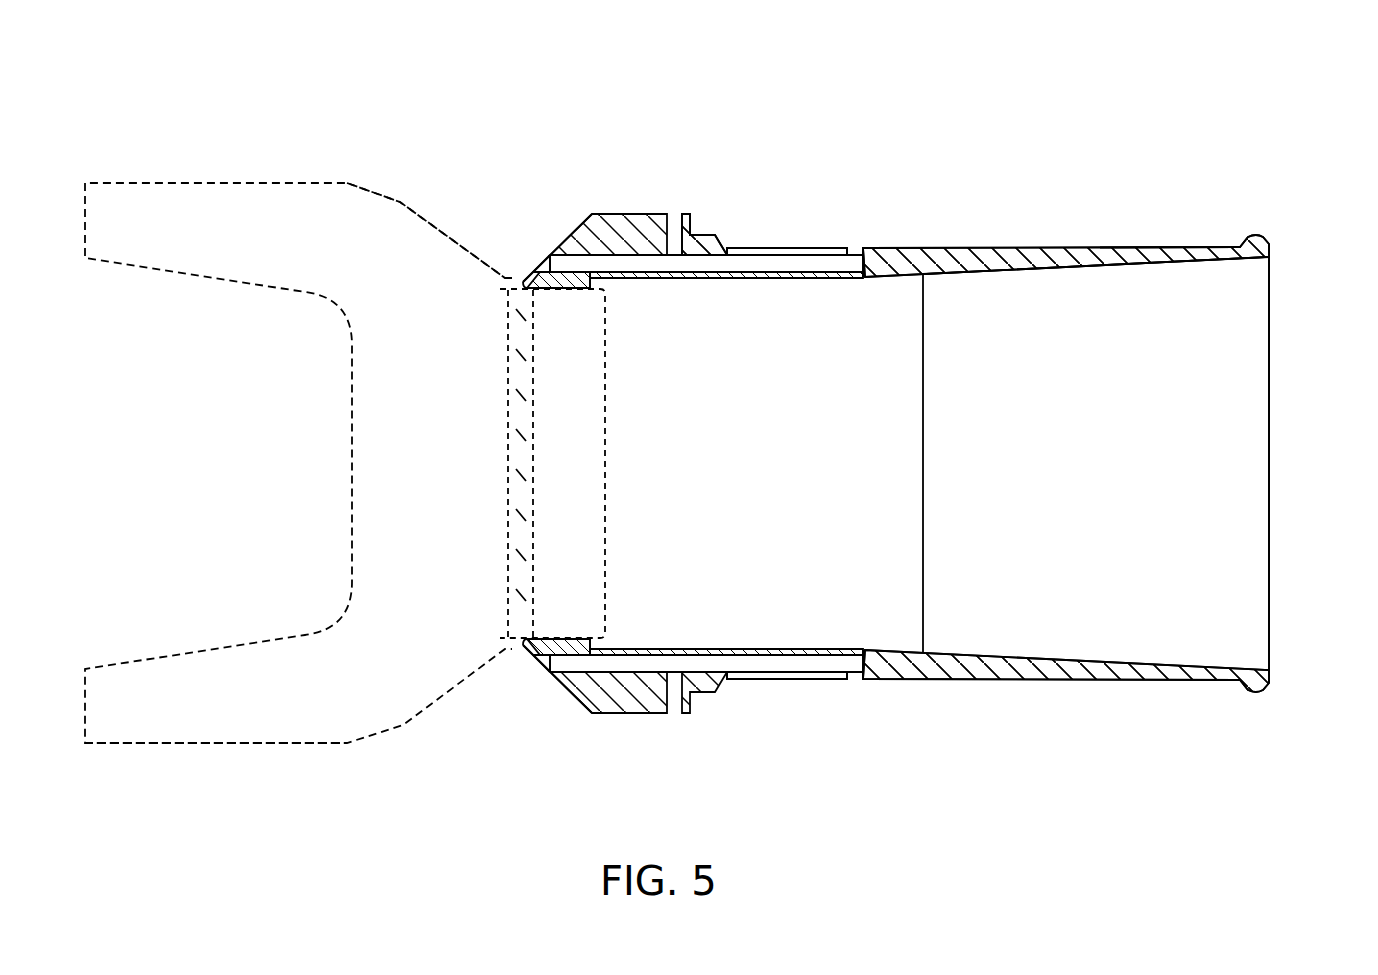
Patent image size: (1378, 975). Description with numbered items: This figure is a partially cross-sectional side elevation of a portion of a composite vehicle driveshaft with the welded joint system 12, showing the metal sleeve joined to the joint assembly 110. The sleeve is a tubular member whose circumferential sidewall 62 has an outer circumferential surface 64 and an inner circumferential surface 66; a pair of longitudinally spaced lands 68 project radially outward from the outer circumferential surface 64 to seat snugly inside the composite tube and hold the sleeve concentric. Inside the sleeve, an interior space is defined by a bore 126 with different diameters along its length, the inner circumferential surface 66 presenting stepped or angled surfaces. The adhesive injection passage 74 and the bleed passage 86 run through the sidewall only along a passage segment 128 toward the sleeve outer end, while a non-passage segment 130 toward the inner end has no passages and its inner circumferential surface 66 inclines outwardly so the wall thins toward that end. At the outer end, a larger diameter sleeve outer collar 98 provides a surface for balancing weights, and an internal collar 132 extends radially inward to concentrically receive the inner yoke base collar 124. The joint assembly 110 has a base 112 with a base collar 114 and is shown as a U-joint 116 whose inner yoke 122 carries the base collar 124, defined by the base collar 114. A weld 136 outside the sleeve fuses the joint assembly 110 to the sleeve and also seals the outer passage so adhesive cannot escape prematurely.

The welded joint system 12 is at (556, 85).
The circumferential sidewall 62 is at (1072, 245).
The outer circumferential surface 64 is at (1163, 245).
The inner circumferential surface 66 is at (1075, 288).
The lands 68 is at (708, 232).
The adhesive injection passage 74 is at (800, 250).
The bleed passage 86 is at (793, 650).
The sleeve outer collar 98 is at (636, 182).
The joint assembly 110 is at (195, 88).
The base 112 is at (428, 158).
The base collar 114 is at (500, 255).
The U-joint 116 is at (112, 140).
The inner yoke 122 is at (280, 770).
The inner yoke base collar 124 is at (567, 612).
The bore 126 is at (1224, 490).
The passage segment 128 is at (800, 690).
The non-passage segment 130 is at (1105, 690).
The internal collar 132 is at (550, 292).
The weld 136 is at (493, 487).